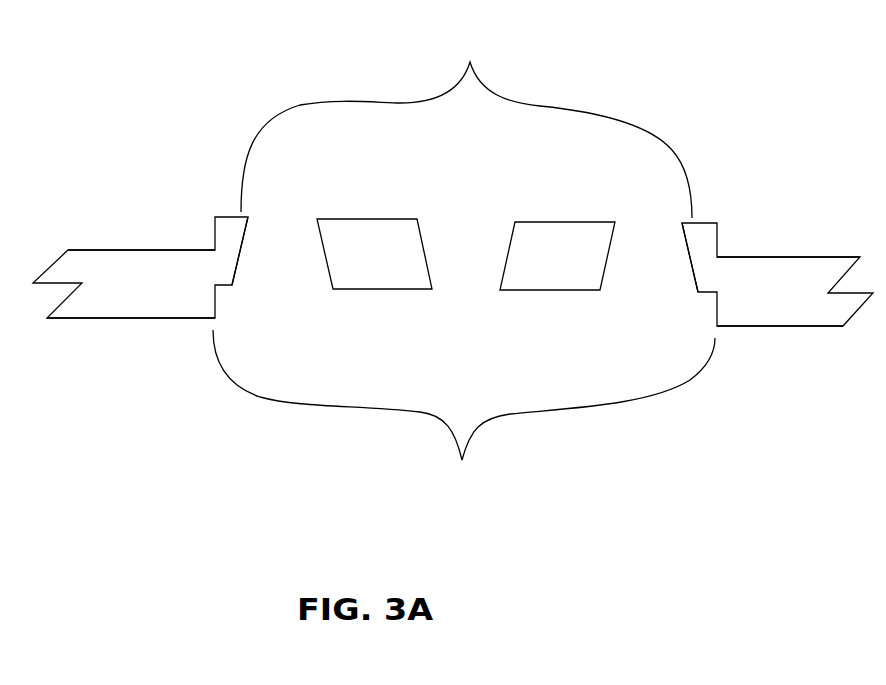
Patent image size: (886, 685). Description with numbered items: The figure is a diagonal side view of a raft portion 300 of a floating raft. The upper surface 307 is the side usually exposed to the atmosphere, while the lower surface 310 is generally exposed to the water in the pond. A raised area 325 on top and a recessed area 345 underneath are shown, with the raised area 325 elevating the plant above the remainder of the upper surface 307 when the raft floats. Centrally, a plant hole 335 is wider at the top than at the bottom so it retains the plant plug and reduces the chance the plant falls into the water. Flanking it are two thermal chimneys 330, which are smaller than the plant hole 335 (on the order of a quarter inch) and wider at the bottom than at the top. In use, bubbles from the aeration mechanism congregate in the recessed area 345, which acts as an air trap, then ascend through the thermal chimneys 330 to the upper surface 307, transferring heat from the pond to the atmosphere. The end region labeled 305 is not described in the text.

The raft portion 300 is at (632, 586).
The arm / end portion 305 is at (111, 301).
The upper surface 307 is at (106, 237).
The lower surface 310 is at (152, 336).
The raised area 325 is at (466, 121).
The thermal chimneys 330 is at (290, 228).
The plant hole 335 is at (465, 282).
The recessed area 345 is at (464, 413).